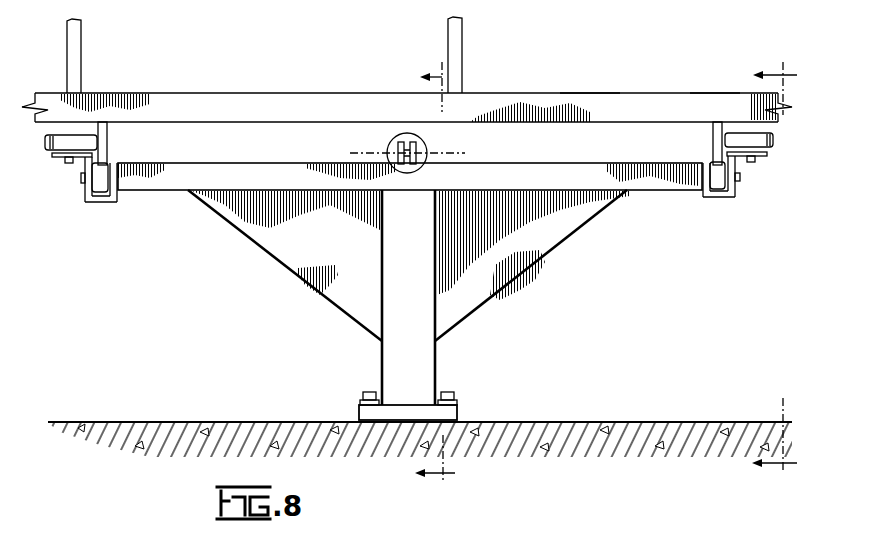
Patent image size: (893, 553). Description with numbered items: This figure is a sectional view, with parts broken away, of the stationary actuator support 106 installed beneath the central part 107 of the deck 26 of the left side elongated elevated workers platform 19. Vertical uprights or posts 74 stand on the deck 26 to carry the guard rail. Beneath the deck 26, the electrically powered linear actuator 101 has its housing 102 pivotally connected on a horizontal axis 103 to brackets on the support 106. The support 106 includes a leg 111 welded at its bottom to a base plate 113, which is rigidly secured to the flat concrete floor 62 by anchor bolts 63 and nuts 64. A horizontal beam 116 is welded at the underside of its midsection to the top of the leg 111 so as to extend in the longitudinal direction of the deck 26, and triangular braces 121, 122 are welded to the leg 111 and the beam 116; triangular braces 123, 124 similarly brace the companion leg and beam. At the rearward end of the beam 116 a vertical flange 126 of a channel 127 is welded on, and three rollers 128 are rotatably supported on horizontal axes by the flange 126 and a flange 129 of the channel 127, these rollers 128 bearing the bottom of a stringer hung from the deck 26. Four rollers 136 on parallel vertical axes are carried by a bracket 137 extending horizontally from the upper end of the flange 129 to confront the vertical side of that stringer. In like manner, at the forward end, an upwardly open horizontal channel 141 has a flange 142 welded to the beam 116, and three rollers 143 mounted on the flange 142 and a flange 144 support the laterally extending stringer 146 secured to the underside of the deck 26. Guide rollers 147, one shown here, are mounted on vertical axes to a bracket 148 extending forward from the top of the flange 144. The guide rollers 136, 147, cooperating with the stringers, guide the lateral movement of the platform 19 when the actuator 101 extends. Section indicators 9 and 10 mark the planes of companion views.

The section line 9- 9 is at (774, 268).
The section line 10- 10 is at (419, 276).
The left side elongated elevated workers platform 19 is at (700, 93).
The deck 26 is at (275, 92).
The flat concrete surface 62 is at (208, 422).
The anchor bolts 63 is at (367, 392).
The nuts 64 is at (360, 401).
The vertical uprights or posts 74 is at (81, 48).
The electrically powered linear actuator 101 is at (426, 146).
The housing 102 is at (406, 148).
The horizontal axis 103 is at (365, 152).
The stationary actuator support 106 is at (438, 371).
The central part of the deck 107 is at (580, 93).
The leg 111 is at (394, 308).
The base plate 113 is at (418, 405).
The horizontal beam 116 is at (147, 178).
The triangular brace 121 is at (272, 232).
The triangular brace 122 is at (547, 228).
The triangular brace 123 is at (323, 278).
The triangular brace 124 is at (536, 257).
The vertical flange 126 is at (701, 193).
The channel 127 is at (709, 190).
The rollers 128 is at (717, 181).
The flange 129 is at (739, 183).
The rollers 136 is at (766, 141).
The bracket 137 is at (759, 158).
The channel 141 is at (86, 199).
The flange 142 is at (118, 198).
The rollers 143 is at (101, 188).
The flange 144 is at (83, 192).
The laterally extending stringer 146 is at (108, 140).
The guide rollers 147 is at (56, 150).
The bracket 148 is at (62, 158).